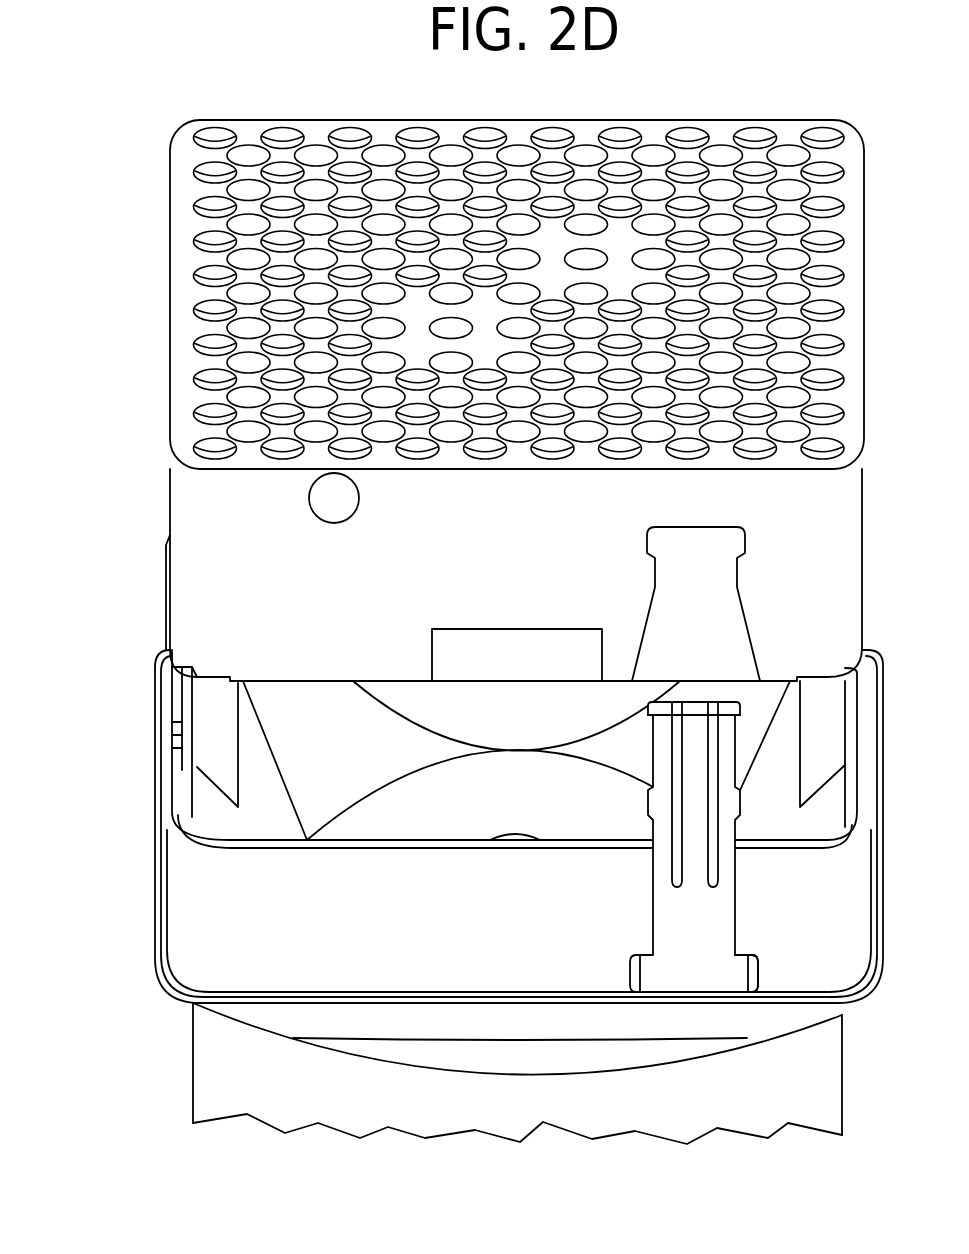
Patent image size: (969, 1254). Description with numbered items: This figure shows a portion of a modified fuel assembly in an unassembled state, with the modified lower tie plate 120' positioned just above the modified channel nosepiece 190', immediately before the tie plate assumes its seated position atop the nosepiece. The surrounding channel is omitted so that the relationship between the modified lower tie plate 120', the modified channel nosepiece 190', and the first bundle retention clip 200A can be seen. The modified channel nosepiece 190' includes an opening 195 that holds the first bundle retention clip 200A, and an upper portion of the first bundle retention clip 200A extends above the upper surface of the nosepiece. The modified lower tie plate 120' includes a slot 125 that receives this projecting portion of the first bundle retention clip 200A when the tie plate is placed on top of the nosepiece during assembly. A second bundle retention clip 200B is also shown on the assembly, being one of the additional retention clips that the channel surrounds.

The modified lower tie plate 120' is at (517, 400).
The slot 125 is at (752, 622).
The modified channel nosepiece 190' is at (519, 897).
The opening 195 is at (763, 962).
The first bundle retention clip 200A is at (700, 963).
The second bundle retention clip 200B is at (168, 712).